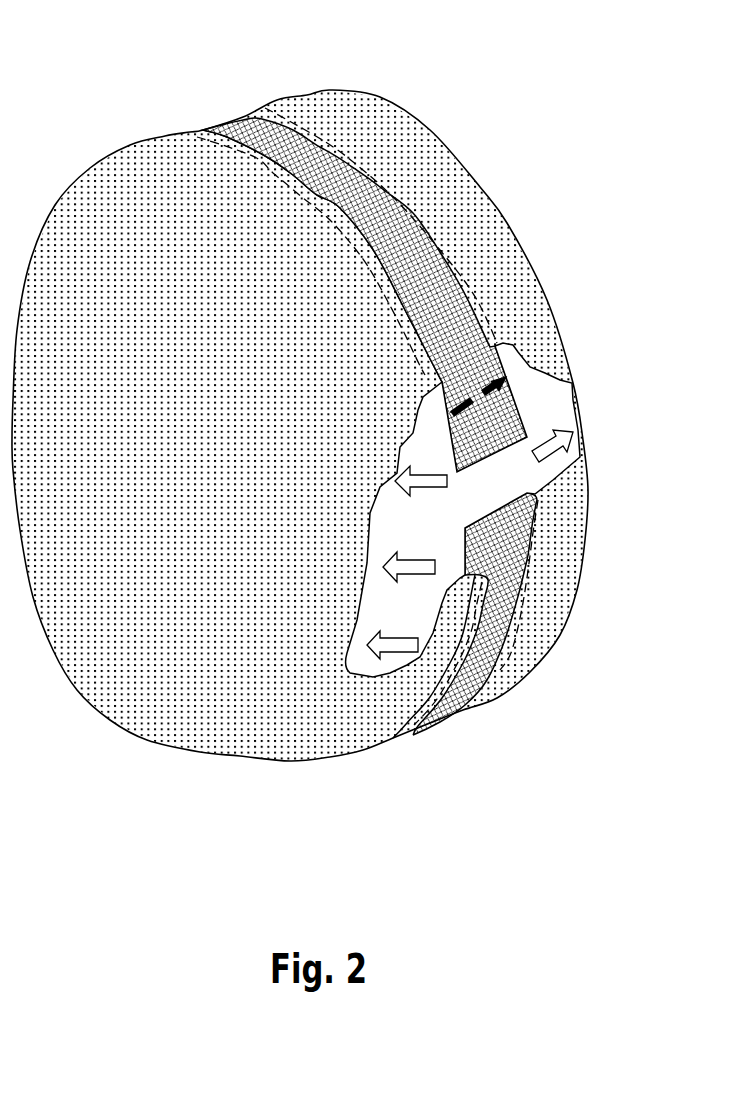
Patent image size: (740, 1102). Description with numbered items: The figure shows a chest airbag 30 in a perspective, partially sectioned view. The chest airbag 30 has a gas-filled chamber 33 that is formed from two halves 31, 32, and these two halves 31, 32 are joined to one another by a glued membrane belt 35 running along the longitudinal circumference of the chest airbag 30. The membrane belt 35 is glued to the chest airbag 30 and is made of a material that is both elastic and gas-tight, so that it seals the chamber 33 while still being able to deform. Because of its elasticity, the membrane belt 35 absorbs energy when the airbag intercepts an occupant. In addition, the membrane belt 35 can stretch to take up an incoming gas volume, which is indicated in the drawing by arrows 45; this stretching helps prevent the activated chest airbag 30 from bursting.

The chest airbag 30 is at (157, 767).
The half of the gas-filled chamber 31 is at (480, 243).
The half of the gas-filled chamber 32 is at (155, 207).
The gas-filled chamber 33 is at (403, 110).
The membrane belt 35 is at (478, 404).
The arrows 45 is at (388, 643).